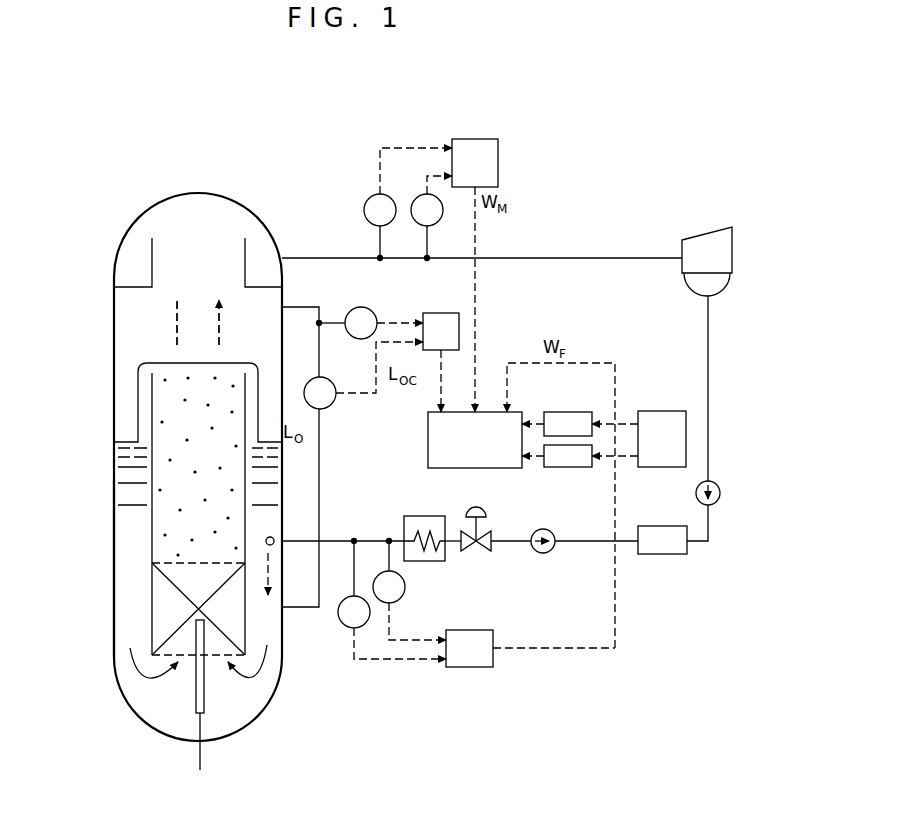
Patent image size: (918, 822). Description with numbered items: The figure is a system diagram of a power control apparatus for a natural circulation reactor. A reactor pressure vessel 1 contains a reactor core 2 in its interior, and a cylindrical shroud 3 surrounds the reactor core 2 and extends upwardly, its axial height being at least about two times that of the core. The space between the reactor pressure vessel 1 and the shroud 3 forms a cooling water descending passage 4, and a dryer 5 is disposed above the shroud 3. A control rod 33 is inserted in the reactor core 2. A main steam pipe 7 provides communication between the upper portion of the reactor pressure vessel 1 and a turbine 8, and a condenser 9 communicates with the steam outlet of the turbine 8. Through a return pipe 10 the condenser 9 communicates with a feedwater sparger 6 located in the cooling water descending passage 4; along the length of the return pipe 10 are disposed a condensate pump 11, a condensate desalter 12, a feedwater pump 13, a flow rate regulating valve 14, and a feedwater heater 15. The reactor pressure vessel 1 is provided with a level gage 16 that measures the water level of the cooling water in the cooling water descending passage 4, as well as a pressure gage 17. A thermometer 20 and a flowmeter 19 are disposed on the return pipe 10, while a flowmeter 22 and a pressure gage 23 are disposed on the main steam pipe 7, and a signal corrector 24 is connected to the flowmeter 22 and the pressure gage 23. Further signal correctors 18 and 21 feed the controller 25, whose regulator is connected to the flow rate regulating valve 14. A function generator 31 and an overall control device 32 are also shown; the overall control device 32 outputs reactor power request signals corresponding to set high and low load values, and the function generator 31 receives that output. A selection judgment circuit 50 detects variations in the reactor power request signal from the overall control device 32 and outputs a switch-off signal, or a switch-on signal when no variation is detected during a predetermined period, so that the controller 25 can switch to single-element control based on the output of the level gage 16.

The reactor pressure vessel 1 is at (199, 193).
The reactor core 2 is at (152, 607).
The shroud 3 is at (152, 530).
The cooling water descending passage 4 is at (128, 562).
The dryer 5 is at (247, 249).
The feedwater sparger 6 is at (273, 538).
The main steam pipe 7 is at (604, 258).
The turbine 8 is at (706, 240).
The condenser 9 is at (690, 292).
The return pipe 10 is at (708, 393).
The condensate pump 11 is at (720, 492).
The condensate desalter 12 is at (662, 554).
The feedwater pump 13 is at (545, 553).
The flow rate regulating valve 14 is at (478, 551).
The feedwater heater 15 is at (432, 516).
The level gage 16 is at (333, 404).
The pressure gage 17 is at (355, 307).
The signal corrector 18 is at (441, 313).
The flowmeter 19 is at (405, 592).
The thermometer 20 is at (342, 625).
The signal corrector 21 is at (464, 667).
The flowmeter 22 is at (440, 222).
The pressure gage 23 is at (366, 198).
The signal corrector 24 is at (477, 139).
The controller 25 is at (428, 450).
The function generator 31 is at (569, 467).
The overall control device 32 is at (662, 411).
The control rod 33 is at (196, 690).
The selection judgment circuit 50 is at (570, 412).